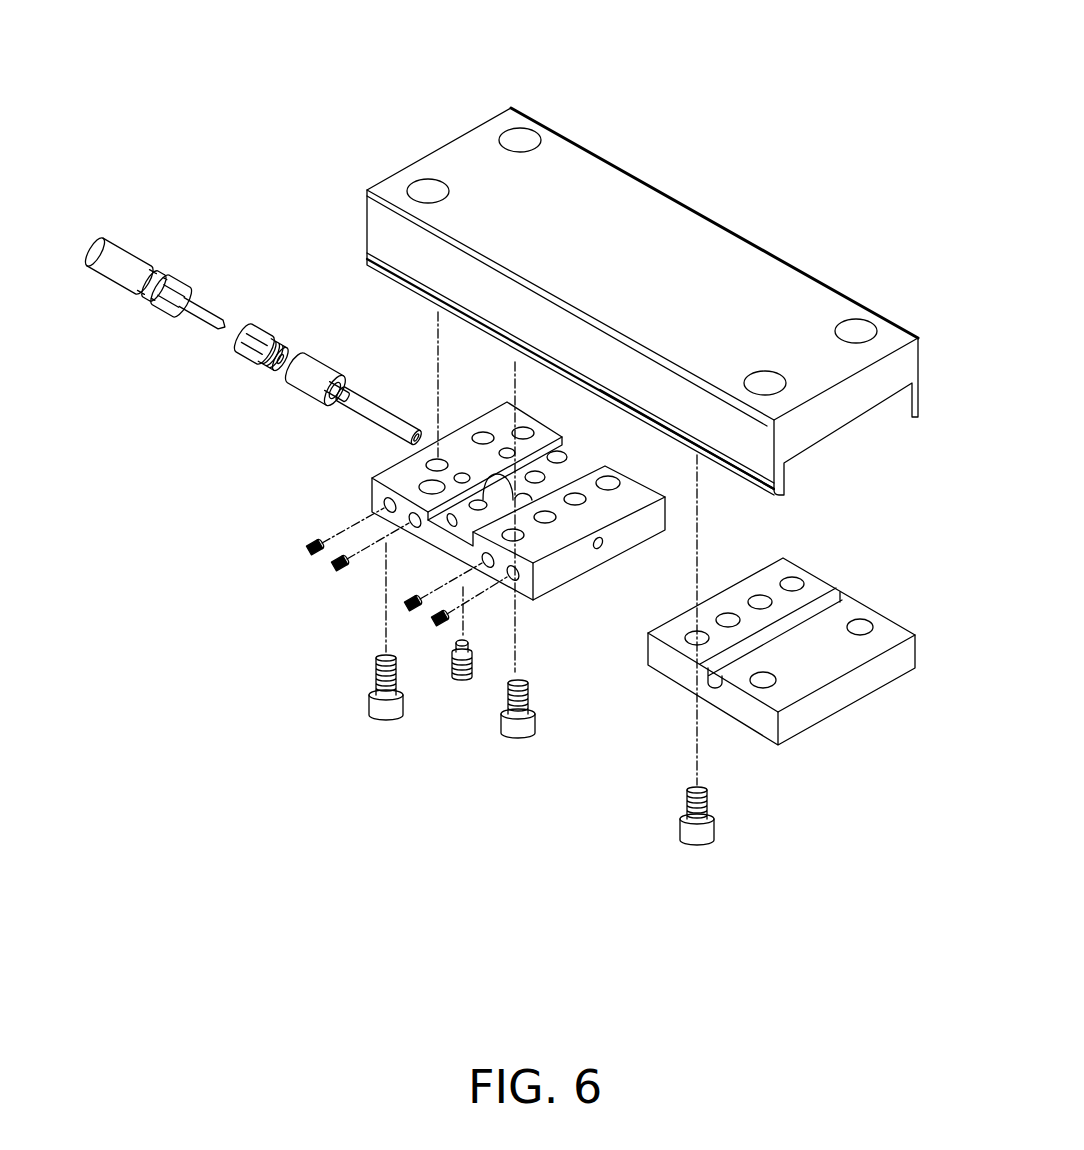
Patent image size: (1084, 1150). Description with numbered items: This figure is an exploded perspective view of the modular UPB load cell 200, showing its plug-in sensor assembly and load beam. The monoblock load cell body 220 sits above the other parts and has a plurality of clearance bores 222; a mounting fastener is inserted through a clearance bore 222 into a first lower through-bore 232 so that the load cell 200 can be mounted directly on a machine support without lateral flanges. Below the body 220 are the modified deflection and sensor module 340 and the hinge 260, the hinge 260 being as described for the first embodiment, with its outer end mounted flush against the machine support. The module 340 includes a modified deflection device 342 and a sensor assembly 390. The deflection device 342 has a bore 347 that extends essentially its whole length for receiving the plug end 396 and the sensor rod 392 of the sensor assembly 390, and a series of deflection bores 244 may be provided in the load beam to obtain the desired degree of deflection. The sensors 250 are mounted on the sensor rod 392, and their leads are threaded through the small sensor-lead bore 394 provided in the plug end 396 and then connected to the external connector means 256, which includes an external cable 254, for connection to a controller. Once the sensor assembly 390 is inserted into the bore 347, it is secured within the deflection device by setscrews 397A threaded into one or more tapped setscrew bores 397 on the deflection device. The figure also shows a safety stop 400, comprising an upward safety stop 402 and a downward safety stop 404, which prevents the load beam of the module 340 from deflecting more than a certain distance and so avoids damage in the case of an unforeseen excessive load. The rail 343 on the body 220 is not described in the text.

The modular UPB load cell 200 is at (685, 145).
The load cell body 220 is at (688, 228).
The clearance bore 222 is at (522, 143).
The first lower through-bore 232 is at (437, 483).
The deflection bore 244 is at (432, 520).
The sensor 250 is at (332, 393).
The external cable 254 is at (108, 268).
The external connector means 256 is at (230, 344).
The hinge 260 is at (827, 663).
The modified deflection and sensor module 340 is at (558, 565).
The modified deflection device 342 is at (580, 520).
The cover rail 343 is at (678, 472).
The bore 347 is at (497, 483).
The sensor assembly 390 is at (216, 429).
The sensor rod 392 is at (377, 413).
The sensor-lead bore 394 is at (332, 377).
The plug end 396 is at (307, 367).
The tapped setscrew bore 397 is at (512, 580).
The setscrew 397A is at (308, 553).
The safety stop 400 is at (372, 722).
The upward safety stop 402 is at (390, 715).
The downward safety stop 404 is at (453, 676).